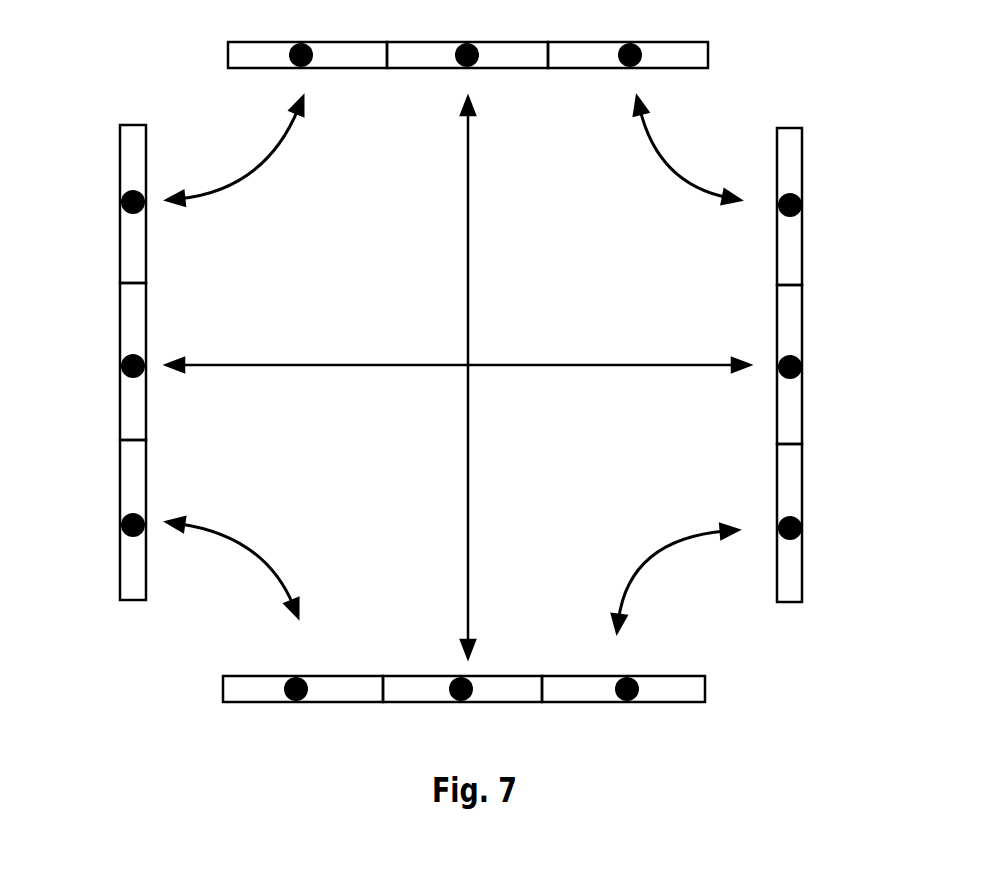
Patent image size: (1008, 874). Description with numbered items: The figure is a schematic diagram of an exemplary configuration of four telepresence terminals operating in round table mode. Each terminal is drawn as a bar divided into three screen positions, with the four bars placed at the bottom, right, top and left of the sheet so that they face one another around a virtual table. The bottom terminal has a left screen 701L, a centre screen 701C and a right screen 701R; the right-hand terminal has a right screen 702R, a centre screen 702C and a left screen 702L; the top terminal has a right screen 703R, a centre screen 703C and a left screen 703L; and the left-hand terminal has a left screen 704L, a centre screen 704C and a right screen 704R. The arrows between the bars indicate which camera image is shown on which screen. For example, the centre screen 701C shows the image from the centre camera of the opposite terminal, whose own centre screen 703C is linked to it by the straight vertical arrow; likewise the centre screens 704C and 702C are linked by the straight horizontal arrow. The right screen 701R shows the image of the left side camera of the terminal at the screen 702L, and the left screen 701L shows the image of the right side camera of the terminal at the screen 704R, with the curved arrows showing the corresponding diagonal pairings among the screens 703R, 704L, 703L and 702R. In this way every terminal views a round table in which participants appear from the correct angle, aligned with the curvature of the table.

The left screen of terminal 701 701L is at (303, 709).
The centre screen of terminal 701 701C is at (462, 709).
The right screen of terminal 701 701R is at (623, 708).
The right screen of terminal 702 702R is at (827, 206).
The centre screen of terminal 702 702C is at (827, 364).
The left screen of terminal 702 702L is at (826, 523).
The right screen of terminal 703 703R is at (307, 34).
The centre screen of terminal 703 703C is at (467, 34).
The left screen of terminal 703 703L is at (628, 34).
The left screen of terminal 704 704L is at (95, 204).
The centre screen of terminal 704 704C is at (94, 361).
The right screen of terminal 704 704R is at (94, 520).